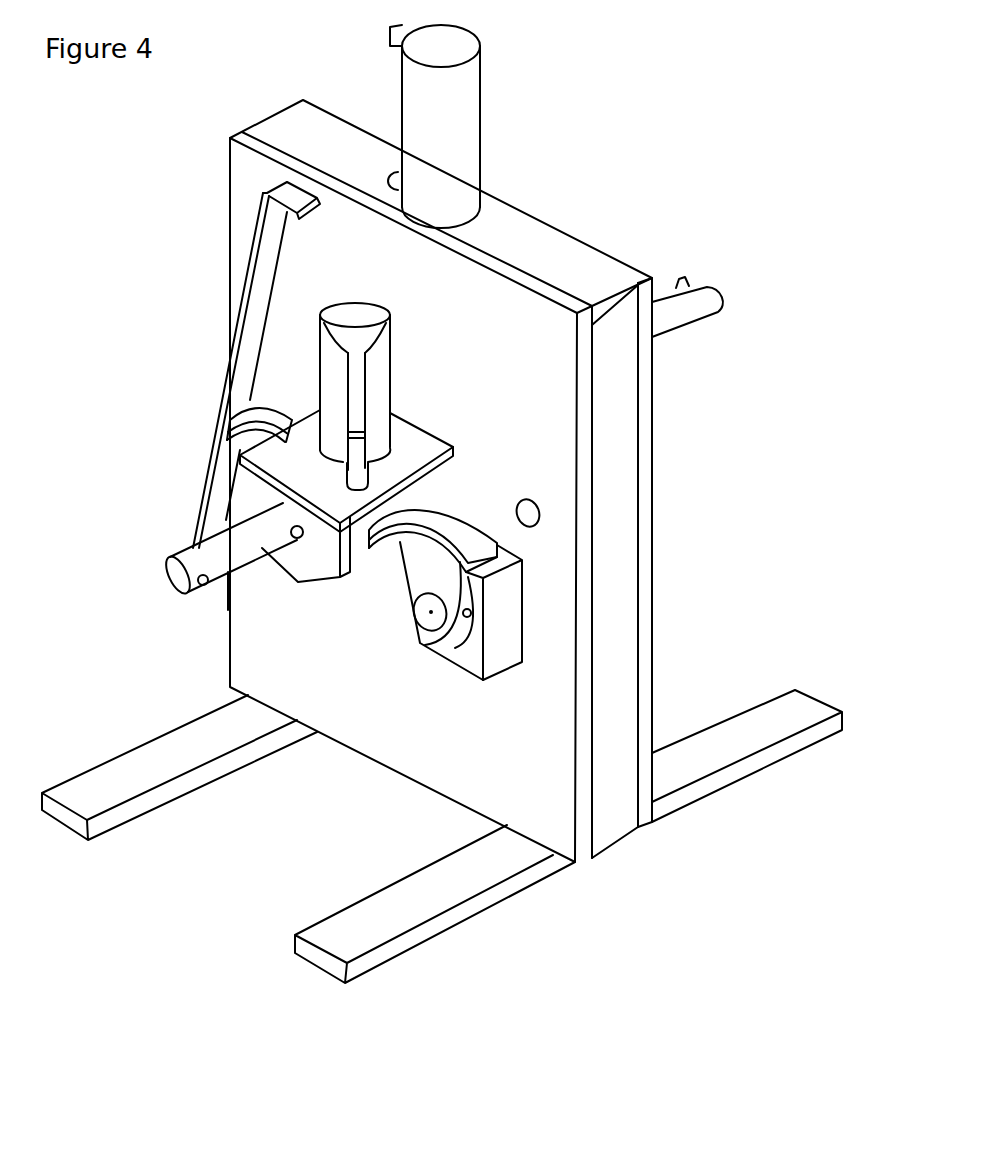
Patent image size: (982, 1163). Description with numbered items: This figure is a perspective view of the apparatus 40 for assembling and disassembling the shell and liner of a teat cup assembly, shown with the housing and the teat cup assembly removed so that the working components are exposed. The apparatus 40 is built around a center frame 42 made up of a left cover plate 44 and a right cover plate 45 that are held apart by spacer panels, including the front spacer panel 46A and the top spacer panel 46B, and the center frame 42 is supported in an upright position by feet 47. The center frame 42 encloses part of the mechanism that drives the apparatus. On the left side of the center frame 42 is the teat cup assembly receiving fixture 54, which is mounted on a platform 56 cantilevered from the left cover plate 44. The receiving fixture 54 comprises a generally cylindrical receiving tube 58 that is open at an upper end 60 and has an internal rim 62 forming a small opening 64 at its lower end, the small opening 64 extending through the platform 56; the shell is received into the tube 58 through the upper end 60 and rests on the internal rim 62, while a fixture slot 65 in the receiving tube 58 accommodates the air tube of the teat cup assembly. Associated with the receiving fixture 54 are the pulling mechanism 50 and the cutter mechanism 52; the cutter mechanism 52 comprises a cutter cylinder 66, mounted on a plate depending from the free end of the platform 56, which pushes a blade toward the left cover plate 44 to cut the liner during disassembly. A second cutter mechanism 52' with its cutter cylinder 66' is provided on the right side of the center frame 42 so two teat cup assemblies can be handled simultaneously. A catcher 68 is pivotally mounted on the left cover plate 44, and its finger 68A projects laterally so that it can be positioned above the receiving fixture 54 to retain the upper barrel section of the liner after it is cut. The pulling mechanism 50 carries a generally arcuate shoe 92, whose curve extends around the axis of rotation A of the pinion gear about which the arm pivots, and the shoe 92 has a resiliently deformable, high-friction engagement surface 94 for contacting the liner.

The apparatus 40 is at (645, 98).
The center frame 42 is at (262, 100).
The left cover plate 44 is at (243, 159).
The right cover plate 45 is at (590, 255).
The front spacer panel 46A is at (618, 665).
The top spacer panel 46B is at (496, 232).
The feet 47 is at (162, 763).
The pulling mechanism 50 is at (356, 631).
The cutter mechanism 52 is at (113, 593).
The cutter mechanism 52' is at (712, 351).
The teat cup assembly receiving fixture 54 is at (420, 308).
The platform 56 is at (270, 456).
The receiving tube 58 is at (382, 353).
The upper end 60 is at (343, 320).
The internal rim 62 is at (360, 428).
The small opening 64 is at (355, 468).
The fixture slot 65 is at (360, 396).
The cutter cylinder 66 is at (222, 550).
The cutter cylinder 66' is at (687, 284).
The catcher 68 is at (242, 375).
The finger 68A is at (297, 198).
The shoe 92 is at (240, 426).
The engagement surface 94 is at (267, 418).
The axis of rotation A is at (377, 648).